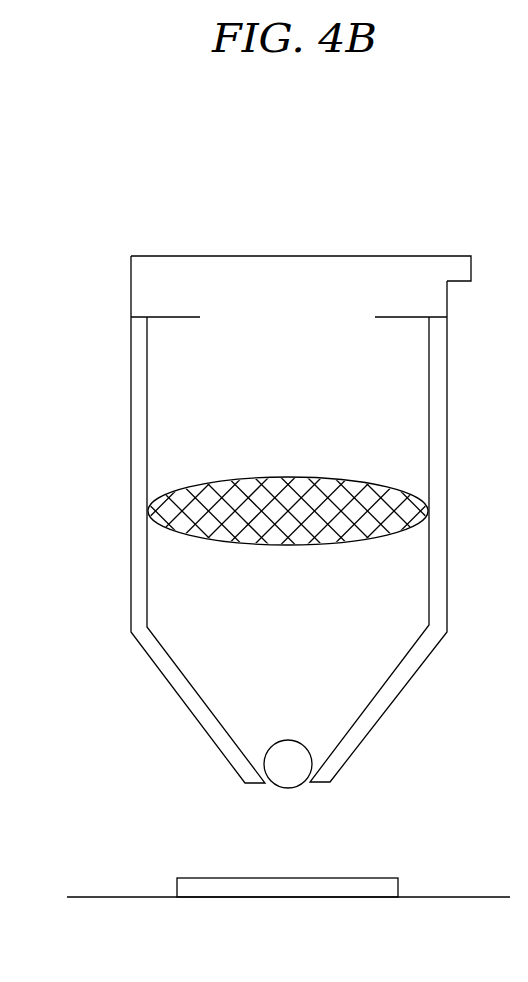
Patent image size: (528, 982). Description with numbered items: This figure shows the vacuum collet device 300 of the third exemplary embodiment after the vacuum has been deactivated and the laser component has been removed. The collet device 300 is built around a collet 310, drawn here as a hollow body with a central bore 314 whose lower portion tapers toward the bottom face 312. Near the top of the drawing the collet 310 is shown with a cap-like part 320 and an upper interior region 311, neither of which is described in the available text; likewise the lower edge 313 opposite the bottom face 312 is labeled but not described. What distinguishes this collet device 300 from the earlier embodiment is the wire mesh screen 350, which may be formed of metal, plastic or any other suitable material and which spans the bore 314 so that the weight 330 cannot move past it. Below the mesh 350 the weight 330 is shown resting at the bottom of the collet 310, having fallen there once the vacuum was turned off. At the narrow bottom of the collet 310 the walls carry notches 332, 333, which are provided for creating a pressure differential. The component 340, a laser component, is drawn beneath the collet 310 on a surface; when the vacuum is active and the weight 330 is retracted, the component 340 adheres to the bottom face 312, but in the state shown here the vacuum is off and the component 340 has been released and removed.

The collet device 300 is at (451, 161).
The collet 310 is at (437, 605).
The inner chamber 311 is at (401, 327).
The bottom face 312 is at (258, 788).
The second bottom edge of housing 313 is at (297, 795).
The bore 314 is at (398, 567).
The cap 320 is at (148, 290).
The weight 330 is at (284, 754).
The notch 332 is at (234, 776).
The notch 333 is at (343, 778).
The component 340 is at (386, 890).
The wire mesh screen 350 is at (380, 512).